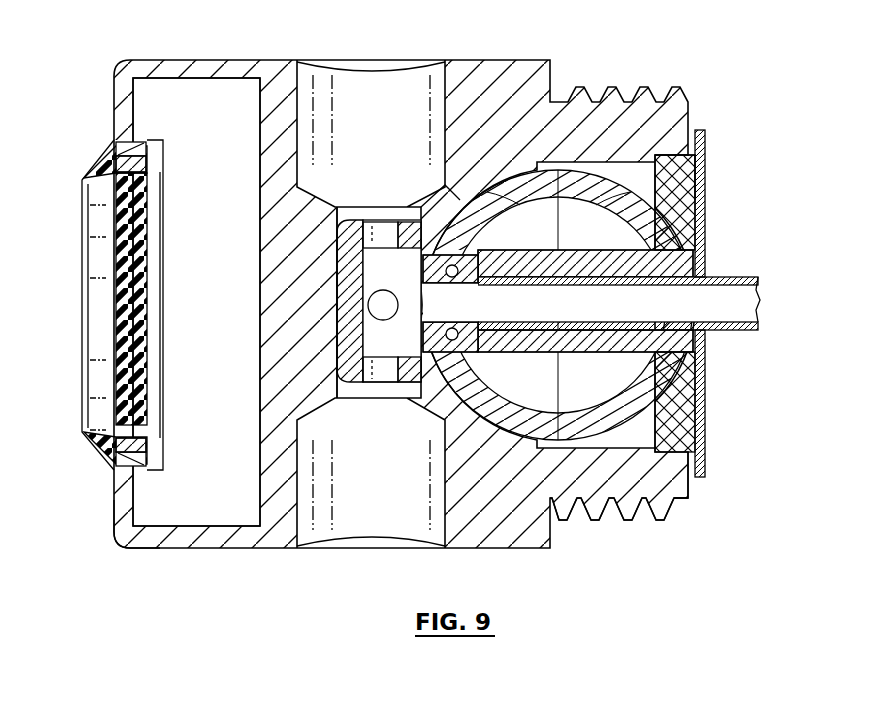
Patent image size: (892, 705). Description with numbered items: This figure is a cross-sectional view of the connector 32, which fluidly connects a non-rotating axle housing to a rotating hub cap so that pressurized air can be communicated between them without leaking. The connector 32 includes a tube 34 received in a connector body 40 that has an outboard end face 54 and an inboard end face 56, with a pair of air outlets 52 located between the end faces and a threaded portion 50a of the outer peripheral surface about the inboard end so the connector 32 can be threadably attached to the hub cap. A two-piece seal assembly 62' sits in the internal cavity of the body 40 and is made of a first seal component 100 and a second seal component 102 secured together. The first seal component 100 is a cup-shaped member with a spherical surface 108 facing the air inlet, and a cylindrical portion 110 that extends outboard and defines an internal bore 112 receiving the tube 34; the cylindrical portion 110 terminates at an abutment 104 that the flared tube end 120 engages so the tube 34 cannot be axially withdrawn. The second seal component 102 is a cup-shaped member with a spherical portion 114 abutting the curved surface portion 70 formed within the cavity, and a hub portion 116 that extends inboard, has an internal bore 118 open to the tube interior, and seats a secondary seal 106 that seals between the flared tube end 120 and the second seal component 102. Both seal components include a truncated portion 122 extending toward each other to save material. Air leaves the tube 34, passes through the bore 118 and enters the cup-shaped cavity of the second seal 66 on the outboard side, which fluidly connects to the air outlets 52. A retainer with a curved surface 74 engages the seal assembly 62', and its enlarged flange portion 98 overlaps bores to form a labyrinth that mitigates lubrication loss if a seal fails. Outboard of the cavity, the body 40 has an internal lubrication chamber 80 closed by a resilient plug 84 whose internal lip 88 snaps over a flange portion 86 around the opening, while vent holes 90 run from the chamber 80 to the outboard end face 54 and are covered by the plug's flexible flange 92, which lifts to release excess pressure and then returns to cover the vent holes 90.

The connector 32 is at (748, 48).
The tube 34 is at (760, 284).
The connector body 40 is at (492, 95).
The threaded portion 50a is at (628, 520).
The air outlets 52 is at (405, 530).
The outboard end face 54 is at (112, 522).
The inboard end face 56 is at (690, 484).
The seal assembly 62' is at (813, 238).
The second seal 66 is at (348, 310).
The curved surface portion 70 is at (445, 185).
The curved surface 74 is at (680, 230).
The internal lubrication chamber 80 is at (200, 520).
The plug 84 is at (118, 356).
The flange portion 86 is at (140, 440).
The internal lip 88 is at (150, 167).
The vent holes 90 is at (138, 455).
The flexible flange 92 is at (96, 442).
The enlarged flange portion 98 is at (705, 465).
The first seal component 100 is at (670, 190).
The second seal component 102 is at (480, 415).
The abutment 104 is at (462, 335).
The secondary seal 106 is at (415, 225).
The spherical surface 108 is at (690, 392).
The cylindrical portion 110 is at (585, 272).
The internal bore 112 is at (552, 335).
The spherical portion 114 is at (497, 205).
The hub portion 116 is at (415, 388).
The internal bore 118 is at (370, 388).
The flared tube end 120 is at (460, 268).
The truncated portion 122 is at (567, 190).